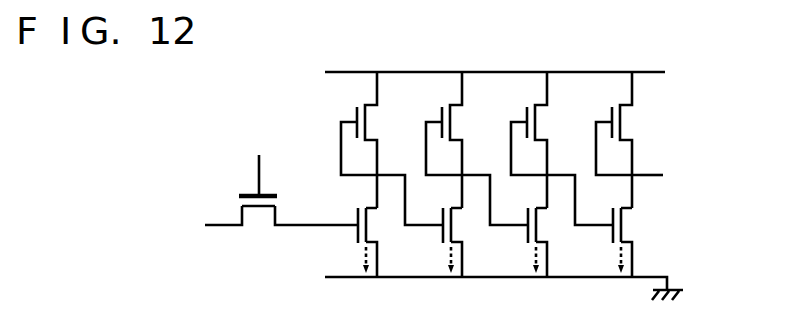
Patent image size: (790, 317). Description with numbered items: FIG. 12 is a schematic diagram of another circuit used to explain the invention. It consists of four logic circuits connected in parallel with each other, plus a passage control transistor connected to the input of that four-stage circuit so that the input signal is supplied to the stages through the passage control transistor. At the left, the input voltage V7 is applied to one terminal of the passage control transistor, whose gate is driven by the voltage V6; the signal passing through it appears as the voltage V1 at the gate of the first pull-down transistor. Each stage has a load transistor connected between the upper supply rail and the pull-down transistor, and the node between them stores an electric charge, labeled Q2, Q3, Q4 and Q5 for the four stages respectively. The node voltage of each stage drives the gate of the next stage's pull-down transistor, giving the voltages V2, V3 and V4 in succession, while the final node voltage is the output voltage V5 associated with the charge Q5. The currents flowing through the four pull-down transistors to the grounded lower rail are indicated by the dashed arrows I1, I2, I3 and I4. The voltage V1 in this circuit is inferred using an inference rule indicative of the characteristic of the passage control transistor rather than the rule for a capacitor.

The voltage V6 is at (258, 160).
The voltage V7 is at (278, 214).
The voltage V1 is at (349, 238).
The voltage V2 is at (437, 238).
The voltage V3 is at (520, 238).
The voltage V4 is at (604, 238).
The voltage V5 is at (675, 164).
The electric charge Q2 is at (392, 148).
The electric charge Q3 is at (477, 148).
The electric charge Q4 is at (562, 148).
The electric charge Q5 is at (638, 140).
The current I1 is at (384, 263).
The current I2 is at (469, 263).
The current I3 is at (553, 263).
The current I4 is at (638, 263).